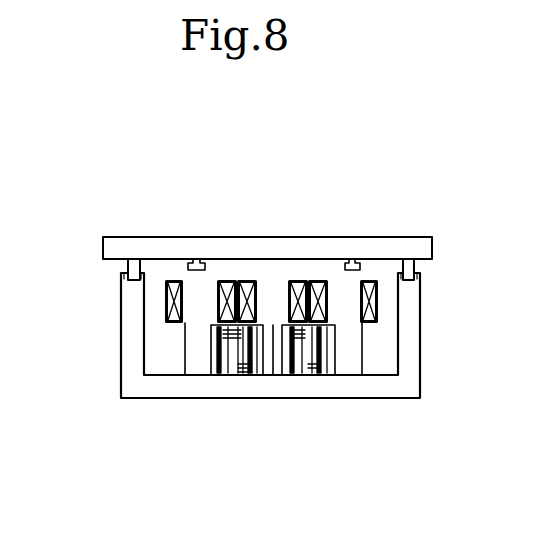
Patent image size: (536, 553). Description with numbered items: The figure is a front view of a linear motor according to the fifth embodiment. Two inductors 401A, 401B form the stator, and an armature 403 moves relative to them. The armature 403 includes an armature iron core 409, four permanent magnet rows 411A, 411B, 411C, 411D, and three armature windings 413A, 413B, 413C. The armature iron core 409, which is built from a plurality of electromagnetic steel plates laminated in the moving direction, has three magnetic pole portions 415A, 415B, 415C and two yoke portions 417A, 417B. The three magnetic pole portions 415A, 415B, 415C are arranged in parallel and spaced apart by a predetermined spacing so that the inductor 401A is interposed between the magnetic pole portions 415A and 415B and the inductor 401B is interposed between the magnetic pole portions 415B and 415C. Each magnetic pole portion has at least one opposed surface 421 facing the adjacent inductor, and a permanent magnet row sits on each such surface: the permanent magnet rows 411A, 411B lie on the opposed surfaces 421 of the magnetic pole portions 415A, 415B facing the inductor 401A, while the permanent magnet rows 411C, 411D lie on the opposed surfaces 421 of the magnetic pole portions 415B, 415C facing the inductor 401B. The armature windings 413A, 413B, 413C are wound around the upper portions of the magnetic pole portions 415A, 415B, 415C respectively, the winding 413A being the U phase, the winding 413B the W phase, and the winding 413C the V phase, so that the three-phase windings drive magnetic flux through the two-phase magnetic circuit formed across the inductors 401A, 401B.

The inductor 401A is at (233, 372).
The inductor 401B is at (308, 376).
The armature 403 is at (384, 306).
The armature iron core 409 is at (350, 330).
The permanent magnet row 411A is at (208, 372).
The permanent magnet row 411B is at (260, 372).
The permanent magnet row 411C is at (275, 372).
The permanent magnet row 411D is at (330, 378).
The armature winding 413A is at (222, 280).
The armature winding 413B is at (293, 282).
The armature winding 413C is at (367, 282).
The magnetic pole portion 415A is at (185, 374).
The magnetic pole portion 415B is at (265, 372).
The magnetic pole portion 415C is at (355, 360).
The yoke portion 417A is at (228, 265).
The yoke portion 417B is at (318, 263).
The opposed surface 421 is at (113, 322).